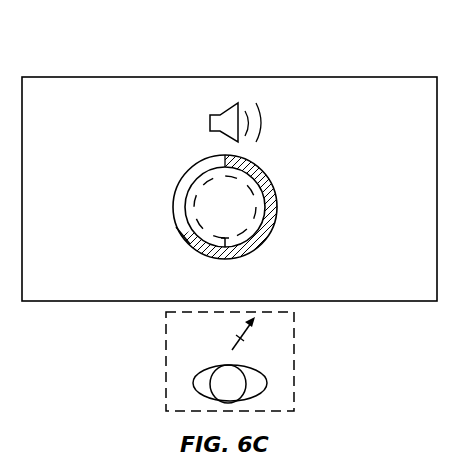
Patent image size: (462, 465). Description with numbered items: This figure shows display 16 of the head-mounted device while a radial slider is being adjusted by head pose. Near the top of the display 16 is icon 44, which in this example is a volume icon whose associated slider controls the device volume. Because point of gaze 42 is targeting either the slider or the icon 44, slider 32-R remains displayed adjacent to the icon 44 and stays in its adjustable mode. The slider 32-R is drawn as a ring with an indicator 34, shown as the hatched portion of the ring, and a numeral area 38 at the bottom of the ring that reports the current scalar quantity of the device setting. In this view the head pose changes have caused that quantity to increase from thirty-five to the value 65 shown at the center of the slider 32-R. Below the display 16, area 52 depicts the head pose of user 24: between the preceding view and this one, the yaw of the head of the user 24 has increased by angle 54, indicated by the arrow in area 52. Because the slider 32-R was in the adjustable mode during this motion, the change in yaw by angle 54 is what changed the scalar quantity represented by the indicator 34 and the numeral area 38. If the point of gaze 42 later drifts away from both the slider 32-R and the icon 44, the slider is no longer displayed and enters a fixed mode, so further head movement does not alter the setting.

The display 16 is at (378, 77).
The icon 44 is at (216, 101).
The slider 32-R is at (165, 184).
The indicator 34 is at (181, 250).
The point of gaze 42 is at (180, 233).
The numeral area 38 is at (224, 243).
The displayed value 65 is at (225, 210).
The area 52 is at (294, 372).
The user 24 is at (193, 382).
The angle 54 is at (236, 348).